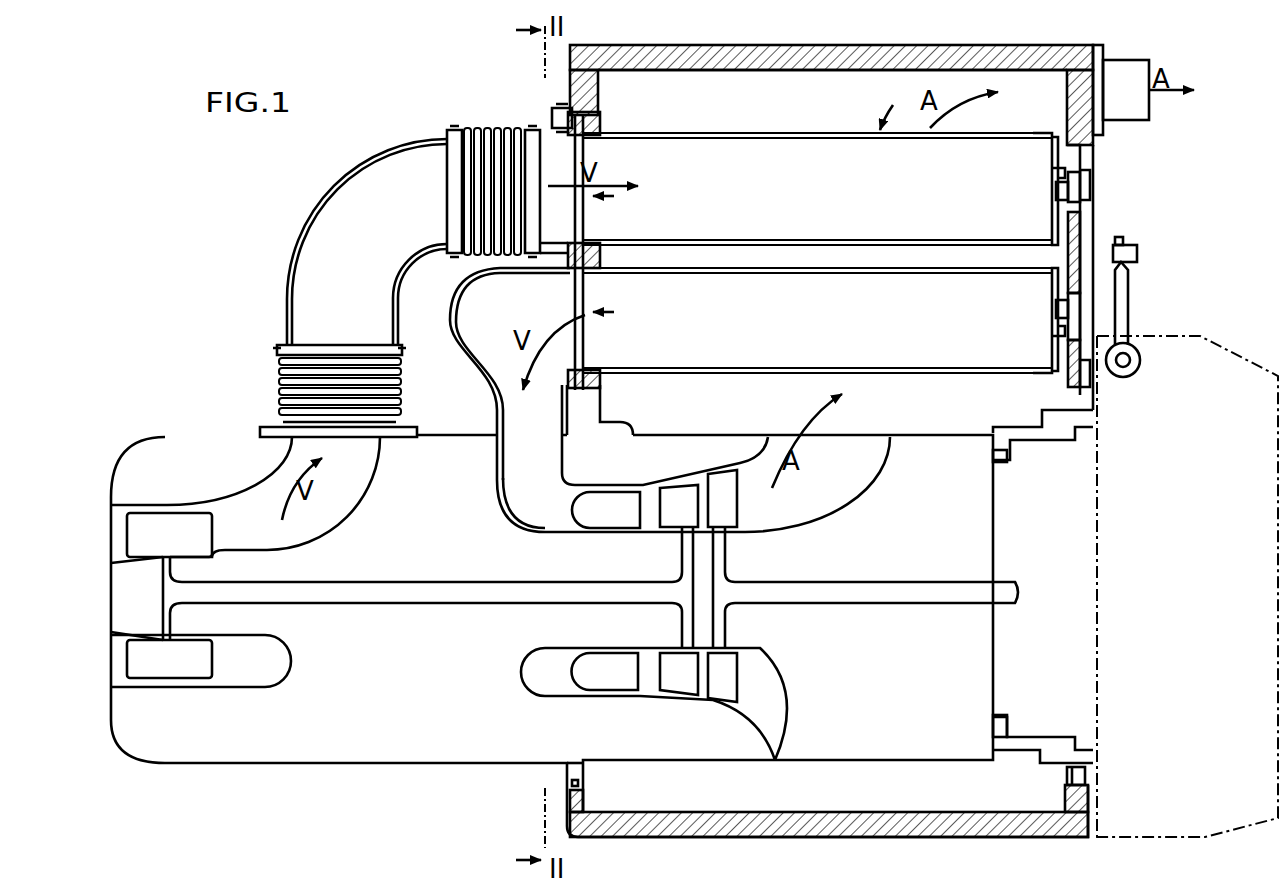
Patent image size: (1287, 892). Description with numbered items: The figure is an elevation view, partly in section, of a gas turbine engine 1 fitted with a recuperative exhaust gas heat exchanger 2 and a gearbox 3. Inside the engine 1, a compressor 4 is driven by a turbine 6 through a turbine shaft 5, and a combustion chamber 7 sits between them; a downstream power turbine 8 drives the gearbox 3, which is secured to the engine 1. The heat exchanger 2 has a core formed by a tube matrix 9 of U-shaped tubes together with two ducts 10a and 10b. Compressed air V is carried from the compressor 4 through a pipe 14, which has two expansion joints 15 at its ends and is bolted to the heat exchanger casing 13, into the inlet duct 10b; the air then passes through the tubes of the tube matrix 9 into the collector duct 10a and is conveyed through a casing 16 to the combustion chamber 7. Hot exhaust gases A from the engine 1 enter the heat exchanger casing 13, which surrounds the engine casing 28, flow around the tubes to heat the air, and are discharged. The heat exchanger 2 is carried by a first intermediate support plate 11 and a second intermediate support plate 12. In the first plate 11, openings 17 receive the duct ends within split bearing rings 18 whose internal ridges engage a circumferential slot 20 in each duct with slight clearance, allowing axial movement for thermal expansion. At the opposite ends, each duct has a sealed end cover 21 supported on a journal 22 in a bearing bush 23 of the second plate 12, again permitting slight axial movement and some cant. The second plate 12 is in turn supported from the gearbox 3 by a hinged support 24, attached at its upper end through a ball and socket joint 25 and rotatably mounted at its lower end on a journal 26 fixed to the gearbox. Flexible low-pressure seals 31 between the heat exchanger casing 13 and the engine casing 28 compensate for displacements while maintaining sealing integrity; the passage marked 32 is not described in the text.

The gas turbine engine 1 is at (381, 750).
The recuperative exhaust gas heat exchanger 2 is at (836, 112).
The gearbox 3 is at (1214, 357).
The compressor 4 is at (170, 515).
The turbine shaft 5 is at (400, 596).
The turbine 6 is at (680, 488).
The combustion chamber 7 is at (591, 514).
The downstream power turbine 8 is at (729, 512).
The tube matrix 9 is at (893, 103).
The collector duct 10a is at (781, 373).
The inlet duct 10b is at (721, 133).
The first intermediate support plate 11 is at (586, 110).
The second intermediate support plate 12 is at (1090, 178).
The heat exchanger casing 13 is at (907, 45).
The pipe 14 is at (322, 206).
The expansion joints 15 is at (492, 128).
The casing 16 is at (456, 303).
The openings 17 is at (616, 197).
The split bearing rings 18 is at (595, 135).
The circumferential slot 20 is at (1040, 137).
The end cover 21 is at (1058, 175).
The journal 22 is at (1058, 193).
The bearing bush 23 is at (1086, 190).
The hinged support 24 is at (1128, 318).
The ball and socket joint 25 is at (1126, 243).
The journal 26 is at (1133, 374).
The engine casing 28 is at (497, 763).
The flexible low-pressure seals 31 is at (586, 782).
The passage 32 is at (384, 482).